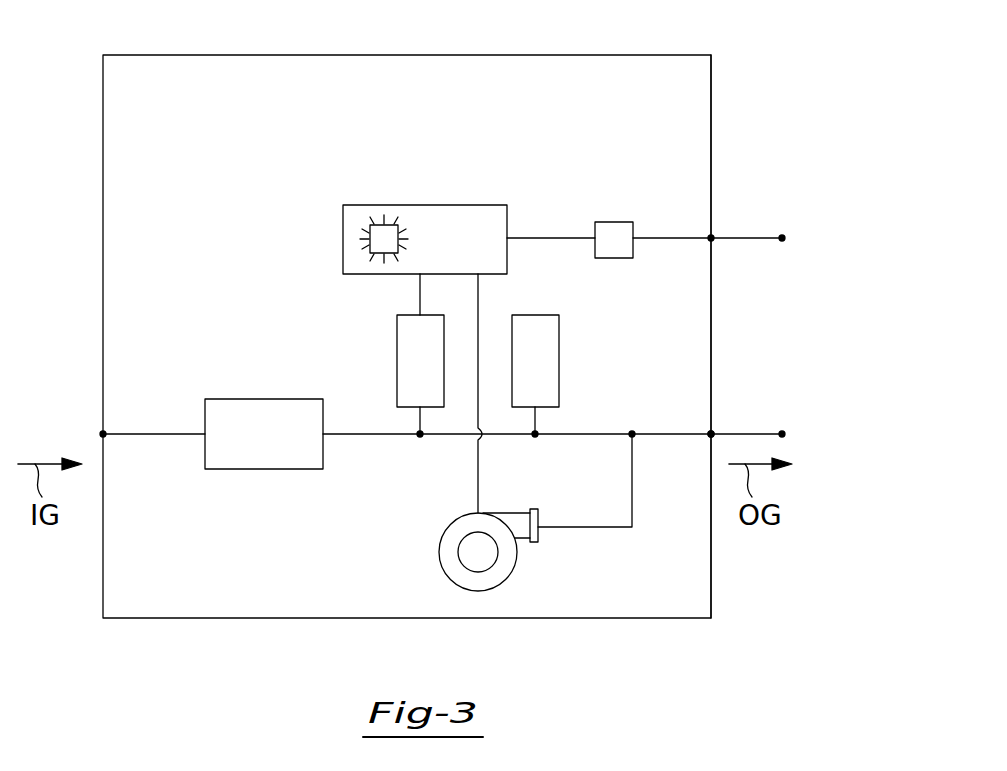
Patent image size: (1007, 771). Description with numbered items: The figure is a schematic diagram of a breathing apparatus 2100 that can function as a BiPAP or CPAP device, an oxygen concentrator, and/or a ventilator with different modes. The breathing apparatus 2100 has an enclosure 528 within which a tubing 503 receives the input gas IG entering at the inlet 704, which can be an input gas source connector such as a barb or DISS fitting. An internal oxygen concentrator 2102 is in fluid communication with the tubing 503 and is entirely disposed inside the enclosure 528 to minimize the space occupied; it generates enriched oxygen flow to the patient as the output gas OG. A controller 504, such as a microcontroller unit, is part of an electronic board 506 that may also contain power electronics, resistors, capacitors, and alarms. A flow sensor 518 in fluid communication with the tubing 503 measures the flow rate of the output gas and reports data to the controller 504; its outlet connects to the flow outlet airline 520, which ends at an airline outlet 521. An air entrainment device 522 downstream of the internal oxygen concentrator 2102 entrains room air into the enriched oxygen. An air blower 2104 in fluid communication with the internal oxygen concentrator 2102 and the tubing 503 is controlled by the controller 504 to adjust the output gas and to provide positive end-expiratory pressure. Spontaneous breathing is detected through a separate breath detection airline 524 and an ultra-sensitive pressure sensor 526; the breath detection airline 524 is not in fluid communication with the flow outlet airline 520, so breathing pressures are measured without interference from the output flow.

The breathing apparatus 2100 is at (752, 50).
The internal oxygen concentrator 2102 is at (262, 399).
The air blower 2104 is at (440, 553).
The tubing 503 is at (155, 434).
The controller 504 is at (385, 225).
The electronic board 506 is at (468, 205).
The flow sensor 518 is at (397, 360).
The flow outlet airline 520 is at (782, 238).
The airline outlet 521 is at (782, 434).
The air entrainment device 522 is at (559, 360).
The breath detection airline 524 is at (711, 238).
The pressure sensor 526 is at (610, 222).
The enclosure 528 is at (711, 128).
The inlet 704 is at (103, 434).